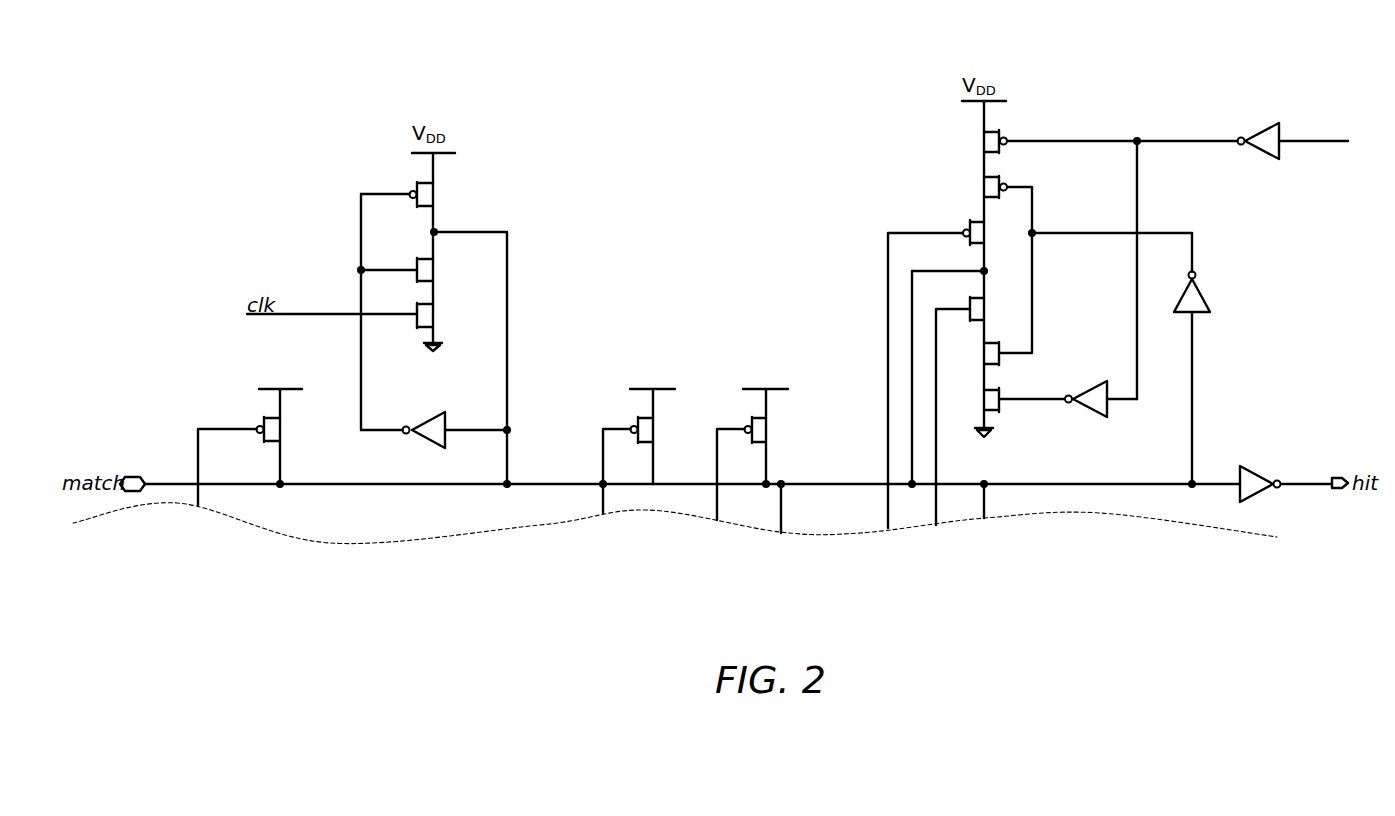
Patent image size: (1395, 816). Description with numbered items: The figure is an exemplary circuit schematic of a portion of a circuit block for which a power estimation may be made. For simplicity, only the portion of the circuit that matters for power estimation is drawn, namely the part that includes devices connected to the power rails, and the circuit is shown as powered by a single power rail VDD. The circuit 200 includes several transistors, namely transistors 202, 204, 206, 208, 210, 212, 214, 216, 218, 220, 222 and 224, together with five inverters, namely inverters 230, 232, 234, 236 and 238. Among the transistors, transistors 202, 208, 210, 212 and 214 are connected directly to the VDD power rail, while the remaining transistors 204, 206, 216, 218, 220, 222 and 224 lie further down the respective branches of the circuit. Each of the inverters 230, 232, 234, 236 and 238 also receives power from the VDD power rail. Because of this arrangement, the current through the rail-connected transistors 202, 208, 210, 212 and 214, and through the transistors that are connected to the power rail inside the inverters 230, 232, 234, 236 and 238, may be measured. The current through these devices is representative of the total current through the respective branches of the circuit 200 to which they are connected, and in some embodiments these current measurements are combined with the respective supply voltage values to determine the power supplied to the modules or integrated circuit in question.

The circuit 200 is at (295, 95).
The transistor 202 is at (433, 196).
The transistor 204 is at (433, 270).
The transistor 206 is at (433, 318).
The transistor 208 is at (277, 432).
The transistor 210 is at (647, 430).
The transistor 212 is at (763, 430).
The transistor 214 is at (982, 140).
The transistor 216 is at (983, 187).
The transistor 218 is at (978, 233).
The transistor 220 is at (980, 307).
The transistor 222 is at (990, 354).
The transistor 224 is at (990, 398).
The inverter 230 is at (430, 413).
The inverter 232 is at (1100, 418).
The inverter 234 is at (1205, 315).
The inverter 236 is at (1267, 157).
The inverter 238 is at (1255, 495).